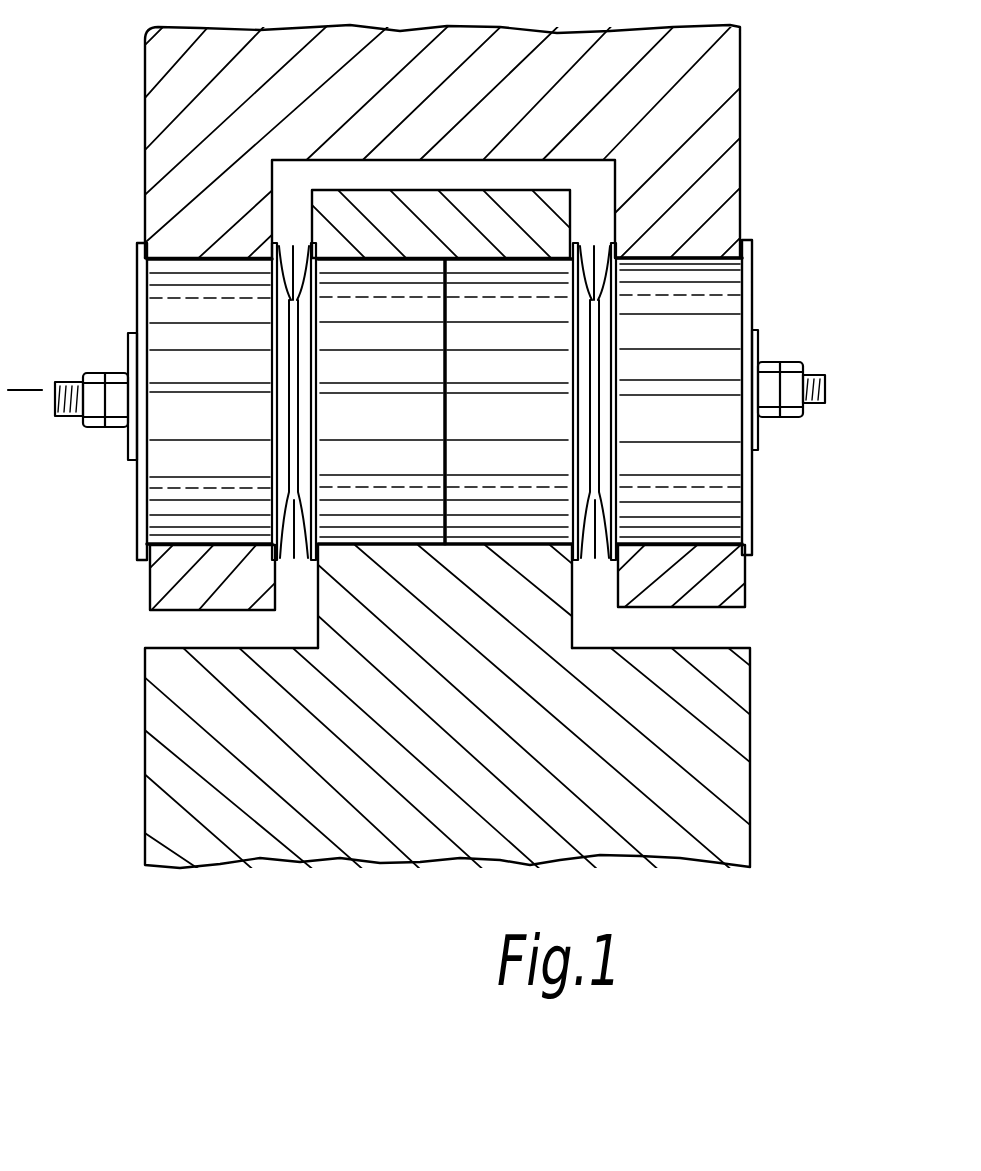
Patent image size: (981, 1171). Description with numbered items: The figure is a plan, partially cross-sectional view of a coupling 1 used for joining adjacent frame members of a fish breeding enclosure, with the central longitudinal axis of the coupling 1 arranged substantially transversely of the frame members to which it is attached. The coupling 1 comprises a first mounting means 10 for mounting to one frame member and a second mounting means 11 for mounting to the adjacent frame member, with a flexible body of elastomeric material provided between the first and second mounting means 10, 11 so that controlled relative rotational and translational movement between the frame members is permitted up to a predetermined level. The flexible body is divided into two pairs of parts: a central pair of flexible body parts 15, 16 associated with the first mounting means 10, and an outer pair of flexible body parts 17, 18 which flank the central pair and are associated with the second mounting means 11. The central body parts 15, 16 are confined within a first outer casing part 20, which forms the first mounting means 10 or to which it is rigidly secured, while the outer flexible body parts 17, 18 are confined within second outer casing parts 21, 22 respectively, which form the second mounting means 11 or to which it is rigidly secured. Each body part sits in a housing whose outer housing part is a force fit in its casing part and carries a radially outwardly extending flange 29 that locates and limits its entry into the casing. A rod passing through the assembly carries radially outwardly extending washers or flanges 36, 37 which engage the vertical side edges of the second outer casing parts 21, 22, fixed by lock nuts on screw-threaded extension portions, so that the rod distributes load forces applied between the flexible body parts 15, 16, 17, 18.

The coupling 1 is at (770, 78).
The first mounting means 10 is at (504, 210).
The second mounting means 11 is at (170, 143).
The central flexible body part 15 is at (296, 590).
The central flexible body part 16 is at (528, 388).
The outer flexible body part 17 is at (226, 392).
The outer flexible body part 18 is at (592, 566).
The first outer casing part 20 is at (510, 630).
The second outer casing part 21 is at (180, 588).
The second outer casing part 22 is at (718, 592).
The radially outwardly extending flange 29 is at (273, 245).
The washer 36 is at (753, 261).
The washer 37 is at (145, 271).